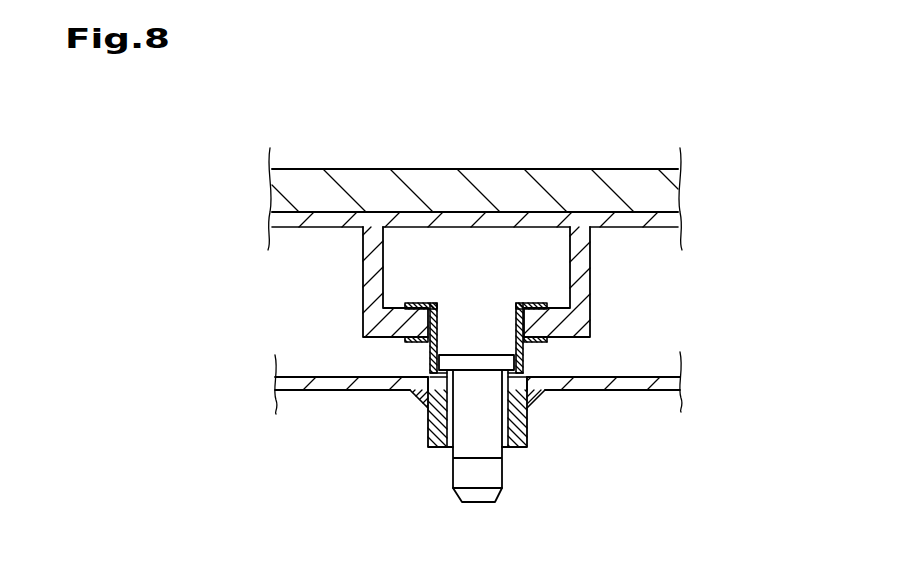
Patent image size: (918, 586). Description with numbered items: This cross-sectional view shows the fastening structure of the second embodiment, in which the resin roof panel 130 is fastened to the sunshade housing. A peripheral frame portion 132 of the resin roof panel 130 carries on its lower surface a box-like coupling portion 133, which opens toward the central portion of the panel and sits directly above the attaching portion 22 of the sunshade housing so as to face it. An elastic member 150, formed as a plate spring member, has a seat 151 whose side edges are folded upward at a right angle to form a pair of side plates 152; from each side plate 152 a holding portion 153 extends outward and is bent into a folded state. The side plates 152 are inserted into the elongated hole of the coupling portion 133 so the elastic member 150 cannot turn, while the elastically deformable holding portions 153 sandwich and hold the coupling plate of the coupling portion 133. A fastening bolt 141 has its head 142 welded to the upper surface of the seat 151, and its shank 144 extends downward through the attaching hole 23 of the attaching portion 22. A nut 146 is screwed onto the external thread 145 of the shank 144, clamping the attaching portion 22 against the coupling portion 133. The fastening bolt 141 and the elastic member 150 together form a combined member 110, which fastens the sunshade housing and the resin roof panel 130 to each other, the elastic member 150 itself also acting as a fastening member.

The resin roof panel 130 is at (372, 168).
The peripheral frame portion 132 is at (345, 219).
The coupling portion 133 is at (593, 278).
The fastening bolt 141 is at (483, 352).
The head 142 is at (541, 357).
The shank 144 is at (490, 476).
The external thread 145 is at (441, 458).
The nut 146 is at (430, 428).
The elastic member 150 is at (427, 359).
The seat 151 is at (523, 366).
The side plate 152 is at (437, 317).
The holding portion 153 is at (420, 358).
The attaching portion 22 is at (312, 382).
The attaching hole 23 is at (425, 405).
The combined member 110 is at (483, 504).